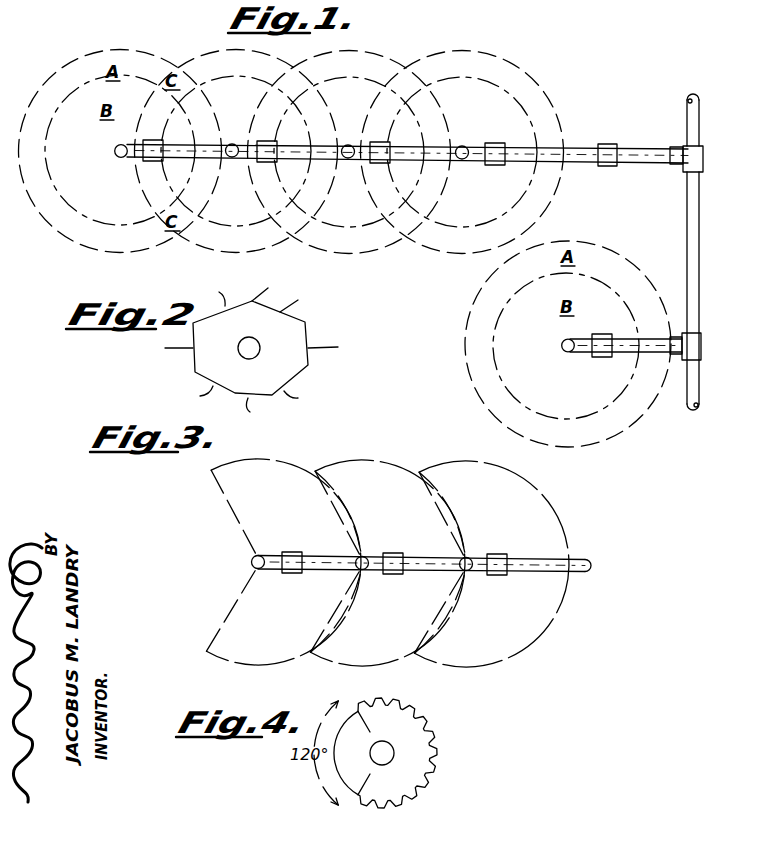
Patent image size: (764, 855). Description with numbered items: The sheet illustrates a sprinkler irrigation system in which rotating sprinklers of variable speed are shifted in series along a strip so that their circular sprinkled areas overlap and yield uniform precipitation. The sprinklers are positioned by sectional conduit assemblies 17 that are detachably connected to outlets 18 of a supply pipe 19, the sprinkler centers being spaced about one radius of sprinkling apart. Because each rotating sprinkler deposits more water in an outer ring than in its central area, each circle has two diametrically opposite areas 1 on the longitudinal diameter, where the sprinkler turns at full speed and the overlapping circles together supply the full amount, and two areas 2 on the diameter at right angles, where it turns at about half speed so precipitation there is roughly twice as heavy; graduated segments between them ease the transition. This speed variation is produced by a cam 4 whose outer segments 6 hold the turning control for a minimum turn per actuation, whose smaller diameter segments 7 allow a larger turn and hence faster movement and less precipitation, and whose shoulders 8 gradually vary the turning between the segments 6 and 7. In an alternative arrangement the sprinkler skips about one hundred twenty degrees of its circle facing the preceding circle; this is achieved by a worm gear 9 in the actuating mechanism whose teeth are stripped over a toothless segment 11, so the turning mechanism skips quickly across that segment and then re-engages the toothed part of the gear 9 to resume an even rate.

In FIG. 1, the areas of full-speed sprinkling 1 is at (157, 133).
In FIG. 1, the areas of slower sprinkling 2 is at (291, 152).
In FIG. 2, the cam 4 is at (250, 348).
In FIG. 2, the outer cam segments 6 is at (250, 348).
In FIG. 2, the smaller diameter cam segments 7 is at (264, 349).
In FIG. 2, the cam shoulders 8 is at (246, 343).
In FIG. 4, the worm gear 9 is at (404, 716).
In FIG. 4, the toothless segment 11 is at (338, 780).
In FIG. 1, the sectional conduit assemblies 17 is at (184, 163).
In FIG. 3, the sectional conduit assemblies 17 is at (310, 552).
In FIG. 1, the outlets 18 is at (703, 158).
In FIG. 1, the supply pipe 19 is at (700, 115).